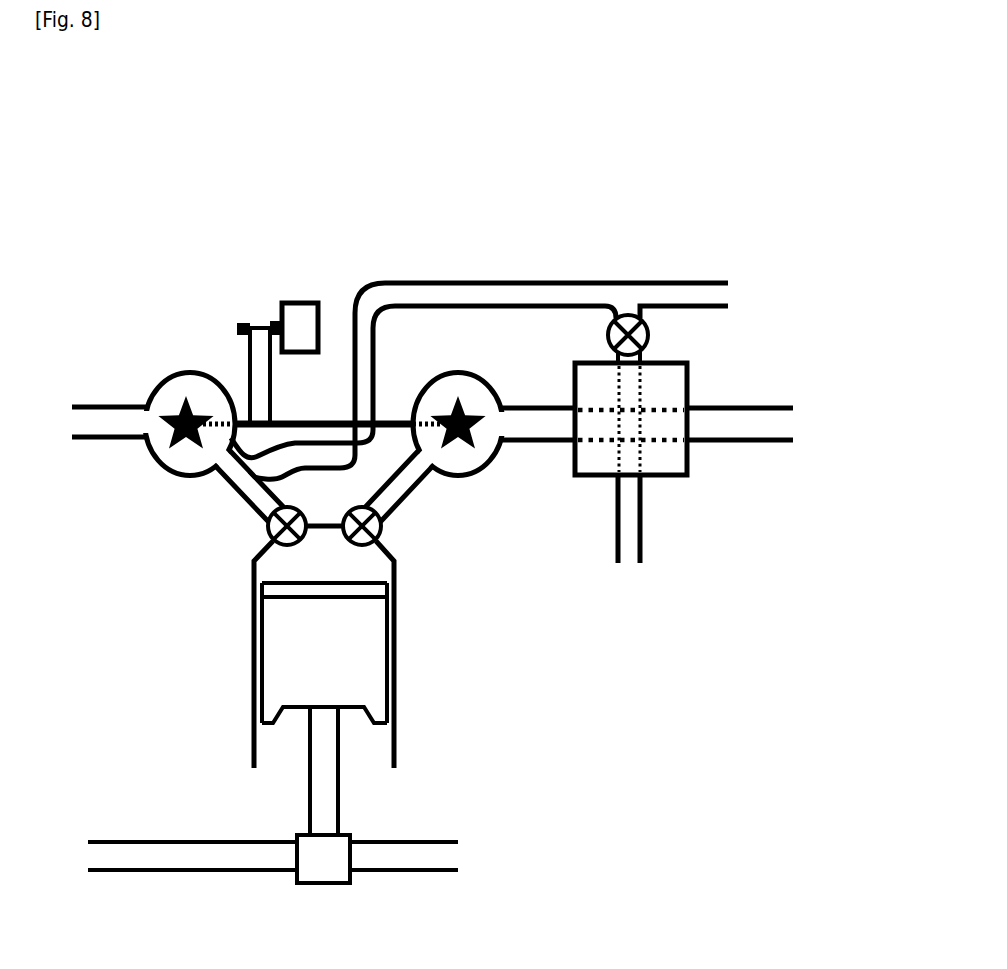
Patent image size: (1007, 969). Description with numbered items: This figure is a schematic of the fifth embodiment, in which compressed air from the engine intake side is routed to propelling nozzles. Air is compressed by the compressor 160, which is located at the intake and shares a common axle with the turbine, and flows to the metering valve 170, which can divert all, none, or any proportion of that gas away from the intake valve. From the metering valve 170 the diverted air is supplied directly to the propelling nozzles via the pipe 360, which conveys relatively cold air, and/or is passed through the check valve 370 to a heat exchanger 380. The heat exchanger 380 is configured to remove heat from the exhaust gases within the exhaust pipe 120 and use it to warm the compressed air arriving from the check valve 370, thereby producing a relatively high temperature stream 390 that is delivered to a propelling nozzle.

The exhaust pipe 120 is at (738, 423).
The compressor 160 is at (198, 393).
The metering valve 170 is at (253, 473).
The pipe 360 is at (697, 292).
The check valve 370 is at (628, 313).
The heat exchanger 380 is at (662, 393).
The high temperature stream 390 is at (630, 543).